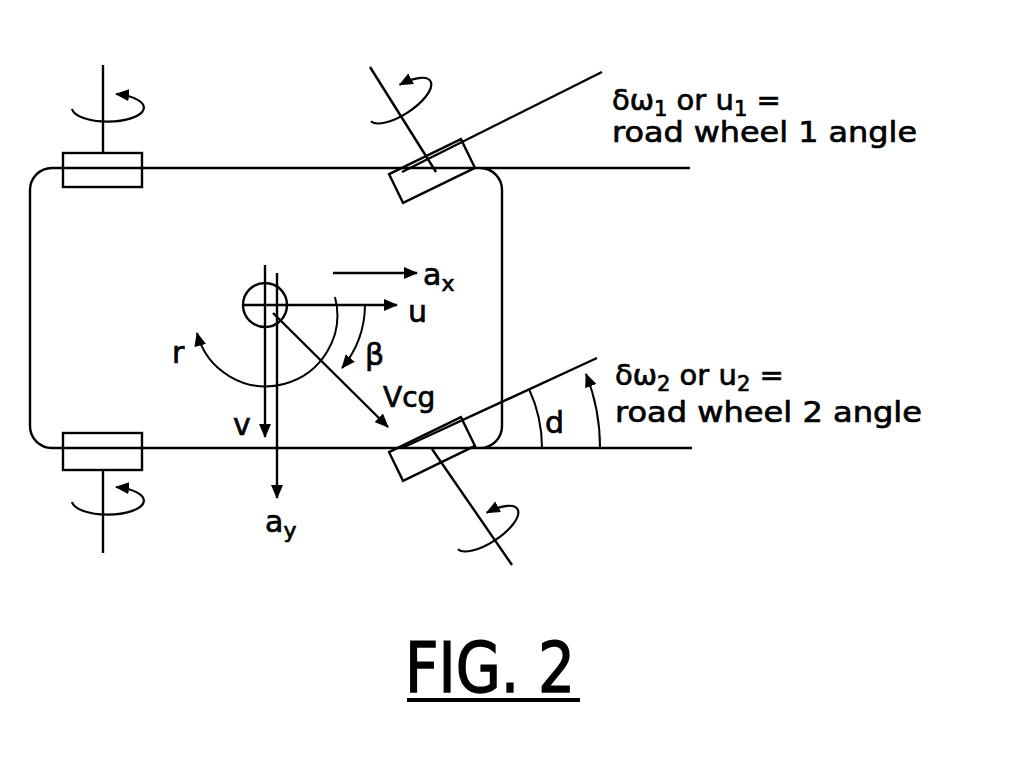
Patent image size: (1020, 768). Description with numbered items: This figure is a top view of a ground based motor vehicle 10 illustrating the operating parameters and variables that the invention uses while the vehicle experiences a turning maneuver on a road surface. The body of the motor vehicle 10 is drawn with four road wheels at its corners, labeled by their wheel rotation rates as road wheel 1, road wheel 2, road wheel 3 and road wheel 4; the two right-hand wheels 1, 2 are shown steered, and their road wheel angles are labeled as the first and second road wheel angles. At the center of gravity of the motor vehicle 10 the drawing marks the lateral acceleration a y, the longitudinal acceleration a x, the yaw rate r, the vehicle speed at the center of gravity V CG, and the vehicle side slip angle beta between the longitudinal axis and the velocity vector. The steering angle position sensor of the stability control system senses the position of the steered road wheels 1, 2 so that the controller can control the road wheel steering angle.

The motor vehicle 10 is at (502, 238).
The road wheel 1 is at (482, 116).
The road wheel 2 is at (494, 462).
The road wheel 3 is at (101, 120).
The road wheel 4 is at (100, 494).